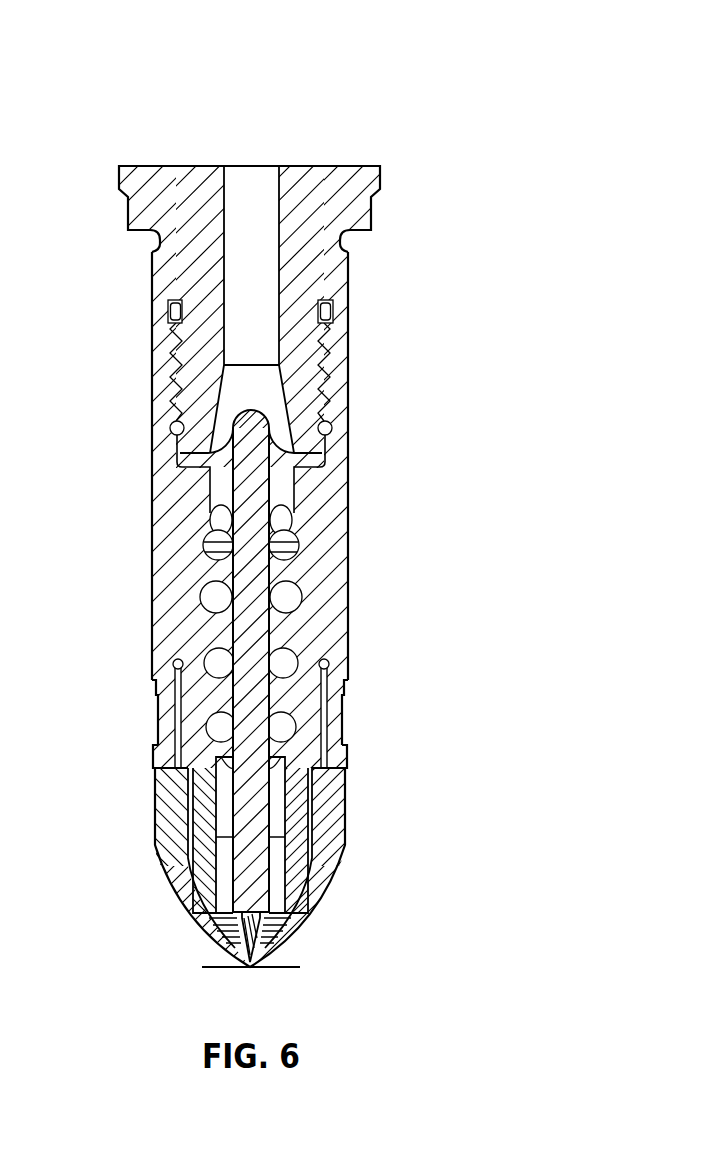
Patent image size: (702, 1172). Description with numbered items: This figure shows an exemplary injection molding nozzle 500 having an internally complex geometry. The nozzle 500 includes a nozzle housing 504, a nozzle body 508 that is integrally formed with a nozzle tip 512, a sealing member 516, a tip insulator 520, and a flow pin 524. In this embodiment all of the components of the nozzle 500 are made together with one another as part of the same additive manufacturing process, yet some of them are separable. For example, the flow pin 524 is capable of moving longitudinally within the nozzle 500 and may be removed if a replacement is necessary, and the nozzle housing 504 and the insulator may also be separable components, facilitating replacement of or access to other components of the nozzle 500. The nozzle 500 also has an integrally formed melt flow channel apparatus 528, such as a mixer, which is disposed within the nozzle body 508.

The nozzle 500 is at (437, 85).
The nozzle housing 504 is at (368, 215).
The nozzle body 508 is at (360, 550).
The nozzle tip 512 is at (344, 702).
The sealing member 516 is at (345, 733).
The tip insulator 520 is at (345, 833).
The flow pin 524 is at (243, 757).
The melt flow channel apparatus 528 is at (190, 575).